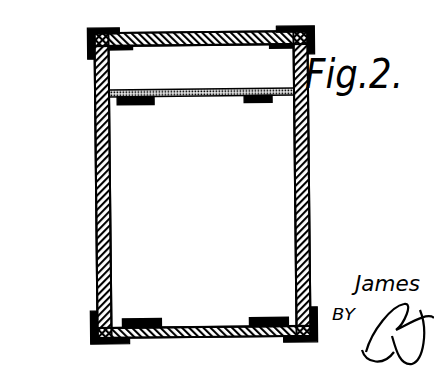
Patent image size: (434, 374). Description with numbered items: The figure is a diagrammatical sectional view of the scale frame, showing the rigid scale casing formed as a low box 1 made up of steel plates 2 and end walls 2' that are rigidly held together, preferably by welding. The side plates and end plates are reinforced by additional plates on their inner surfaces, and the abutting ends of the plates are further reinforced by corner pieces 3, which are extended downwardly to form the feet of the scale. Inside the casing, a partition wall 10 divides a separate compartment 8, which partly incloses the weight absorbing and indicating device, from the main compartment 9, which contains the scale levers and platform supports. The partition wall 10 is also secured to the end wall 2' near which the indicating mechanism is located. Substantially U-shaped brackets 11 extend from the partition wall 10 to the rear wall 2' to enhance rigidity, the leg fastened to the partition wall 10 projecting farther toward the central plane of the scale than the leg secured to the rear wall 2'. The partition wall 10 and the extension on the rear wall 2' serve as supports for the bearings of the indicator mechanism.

The low box 1 is at (288, 148).
The steel plates 2 is at (203, 184).
The end walls 2' is at (202, 186).
The corner pieces 3 is at (90, 50).
The separate compartment 8 is at (193, 71).
The main compartment 9 is at (193, 201).
The partition wall 10 is at (197, 96).
The U-shaped brackets 11 is at (110, 72).